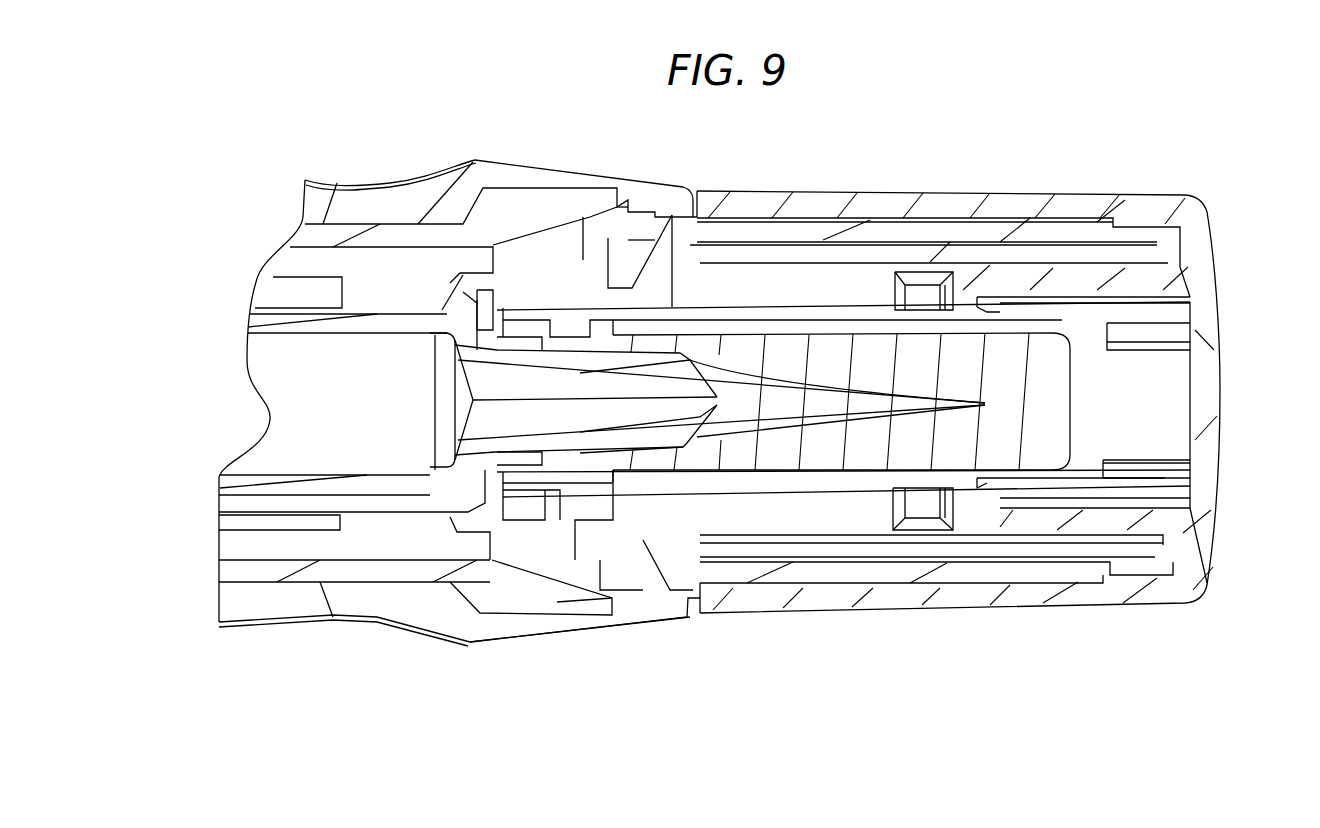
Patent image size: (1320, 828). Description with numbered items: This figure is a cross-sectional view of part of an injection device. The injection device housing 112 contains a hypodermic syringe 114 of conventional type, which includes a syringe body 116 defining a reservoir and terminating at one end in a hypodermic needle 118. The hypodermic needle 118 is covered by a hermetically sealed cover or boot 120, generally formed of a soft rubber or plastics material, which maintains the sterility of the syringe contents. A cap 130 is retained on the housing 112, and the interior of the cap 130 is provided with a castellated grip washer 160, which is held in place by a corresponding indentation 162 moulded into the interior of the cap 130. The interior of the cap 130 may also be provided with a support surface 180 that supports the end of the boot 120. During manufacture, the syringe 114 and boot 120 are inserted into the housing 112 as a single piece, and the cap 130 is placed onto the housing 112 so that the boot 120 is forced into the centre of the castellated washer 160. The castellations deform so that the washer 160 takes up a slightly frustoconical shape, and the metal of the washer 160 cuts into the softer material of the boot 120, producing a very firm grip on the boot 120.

The injection device housing 112 is at (522, 620).
The hypodermic syringe 114 is at (273, 362).
The syringe body 116 is at (227, 480).
The hypodermic needle 118 is at (832, 403).
The boot 120 is at (840, 313).
The cap 130 is at (1143, 207).
The castellated grip washer 160 is at (940, 513).
The indentation 162 is at (950, 290).
The support surface 180 is at (1100, 313).